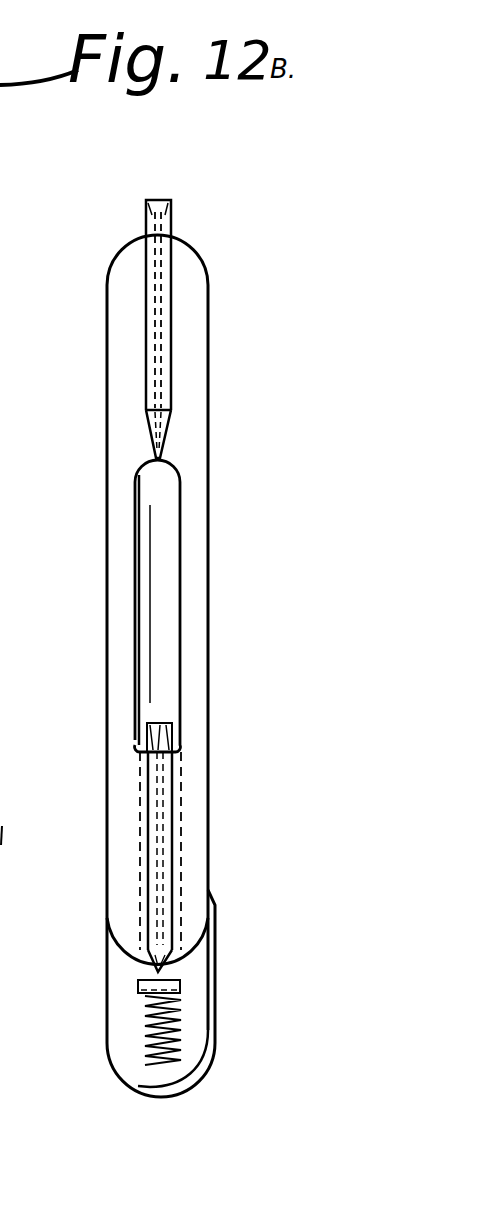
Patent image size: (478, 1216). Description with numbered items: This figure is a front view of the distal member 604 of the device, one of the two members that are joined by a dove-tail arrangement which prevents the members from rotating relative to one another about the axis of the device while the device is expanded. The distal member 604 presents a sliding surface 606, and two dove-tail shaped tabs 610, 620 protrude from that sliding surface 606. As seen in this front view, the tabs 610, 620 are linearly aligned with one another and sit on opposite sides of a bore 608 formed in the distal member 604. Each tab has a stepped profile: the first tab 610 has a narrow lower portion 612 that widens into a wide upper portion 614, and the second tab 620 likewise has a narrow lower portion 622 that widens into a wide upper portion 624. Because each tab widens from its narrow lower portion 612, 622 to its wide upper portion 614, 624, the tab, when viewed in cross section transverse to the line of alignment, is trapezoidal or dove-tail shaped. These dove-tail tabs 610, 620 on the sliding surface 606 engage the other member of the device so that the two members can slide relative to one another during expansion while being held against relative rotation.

The distal member 604 is at (213, 1040).
The sliding surface 606 is at (198, 595).
The bore 608 is at (170, 533).
The tab 610 is at (170, 222).
The narrow lower portion 612 is at (165, 458).
The wide upper portion 614 is at (153, 402).
The tab 620 is at (170, 812).
The narrow lower portion 622 is at (160, 975).
The wide upper portion 624 is at (158, 975).